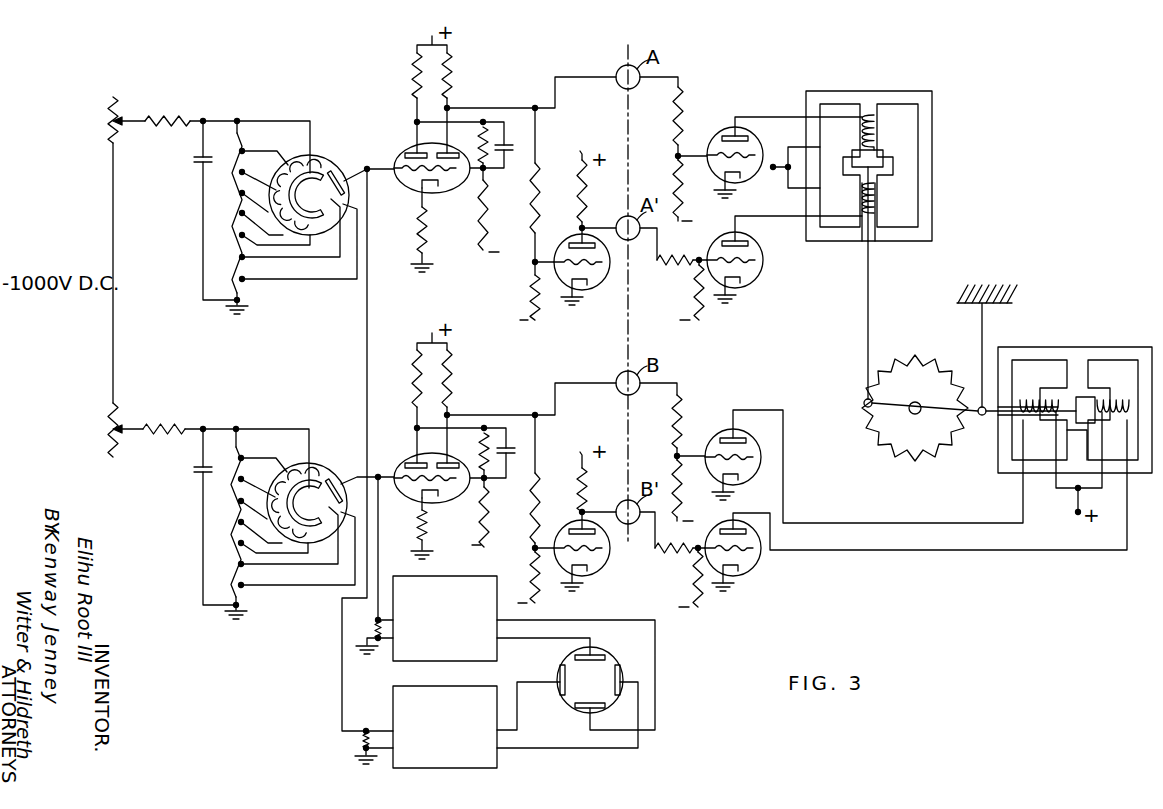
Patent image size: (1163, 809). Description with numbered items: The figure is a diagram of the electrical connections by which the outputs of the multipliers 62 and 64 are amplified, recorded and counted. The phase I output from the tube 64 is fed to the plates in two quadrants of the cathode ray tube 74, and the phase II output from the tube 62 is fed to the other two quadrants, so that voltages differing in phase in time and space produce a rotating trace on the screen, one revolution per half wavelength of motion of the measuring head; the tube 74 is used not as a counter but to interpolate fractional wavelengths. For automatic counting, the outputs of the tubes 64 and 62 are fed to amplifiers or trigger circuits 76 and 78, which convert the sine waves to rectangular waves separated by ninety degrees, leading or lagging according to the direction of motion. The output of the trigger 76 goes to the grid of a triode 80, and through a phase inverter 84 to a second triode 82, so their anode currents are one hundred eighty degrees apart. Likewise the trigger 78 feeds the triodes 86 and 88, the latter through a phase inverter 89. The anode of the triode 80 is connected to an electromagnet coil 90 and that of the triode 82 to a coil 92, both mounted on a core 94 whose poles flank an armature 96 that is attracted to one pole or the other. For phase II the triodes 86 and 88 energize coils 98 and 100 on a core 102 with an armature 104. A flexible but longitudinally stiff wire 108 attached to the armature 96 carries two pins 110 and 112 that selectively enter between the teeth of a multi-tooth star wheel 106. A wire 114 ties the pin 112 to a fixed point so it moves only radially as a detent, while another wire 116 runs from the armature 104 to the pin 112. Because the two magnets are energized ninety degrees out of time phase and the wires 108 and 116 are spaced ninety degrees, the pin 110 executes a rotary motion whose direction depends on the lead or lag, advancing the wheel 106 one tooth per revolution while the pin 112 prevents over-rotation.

The multiplier 62 is at (322, 466).
The multiplier 64 is at (326, 157).
The cathode ray tube 74 is at (613, 665).
The amplifier or trigger circuit 76 is at (410, 196).
The amplifier or trigger circuit 78 is at (410, 506).
The triode 80 is at (717, 134).
The second triode 82 is at (756, 280).
The phase inverter 84 is at (598, 293).
The triode 86 is at (720, 440).
The triode 88 is at (751, 572).
The phase inverter 89 is at (604, 571).
The electromagnet coil 90 is at (868, 115).
The coil 92 is at (858, 213).
The core 94 is at (930, 122).
The armature 96 is at (880, 170).
The coil 98 is at (1040, 392).
The coil 100 is at (1110, 399).
The core 102 is at (1116, 352).
The armature 104 is at (1083, 396).
The multi-tooth star wheel 106 is at (876, 430).
The wire 108 is at (870, 285).
The pin 110 is at (862, 407).
The pin 112 is at (978, 418).
The wire 114 is at (980, 328).
The wire 116 is at (993, 432).